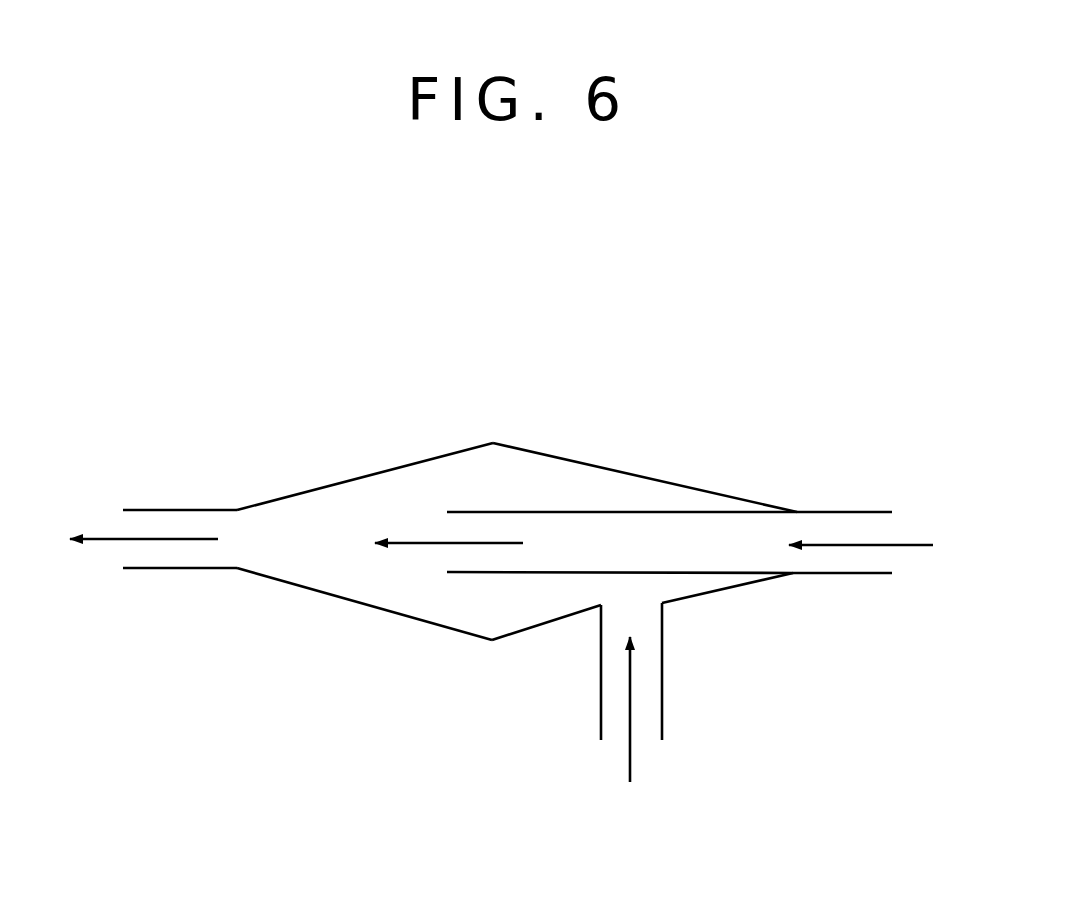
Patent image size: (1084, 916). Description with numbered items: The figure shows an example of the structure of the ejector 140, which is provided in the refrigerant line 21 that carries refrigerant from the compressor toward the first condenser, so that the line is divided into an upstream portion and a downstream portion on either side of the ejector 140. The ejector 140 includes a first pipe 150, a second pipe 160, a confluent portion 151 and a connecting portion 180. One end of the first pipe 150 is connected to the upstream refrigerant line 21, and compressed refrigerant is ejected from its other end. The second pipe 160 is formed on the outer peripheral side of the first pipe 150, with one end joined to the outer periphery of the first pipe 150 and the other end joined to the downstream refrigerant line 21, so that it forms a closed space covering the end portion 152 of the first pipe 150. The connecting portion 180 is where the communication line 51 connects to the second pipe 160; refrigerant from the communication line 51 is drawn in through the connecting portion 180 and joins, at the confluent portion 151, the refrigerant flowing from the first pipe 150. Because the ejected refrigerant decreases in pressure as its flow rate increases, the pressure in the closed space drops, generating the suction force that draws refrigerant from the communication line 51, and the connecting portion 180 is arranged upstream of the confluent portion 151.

The ejector 140 is at (503, 535).
The refrigerant line 21 is at (182, 508).
The confluent portion 151 is at (392, 505).
The end portion 152 is at (447, 510).
The second pipe 160 is at (583, 462).
The first pipe 150 is at (658, 511).
The connecting portion 180 is at (663, 607).
The communication line 51 is at (662, 673).